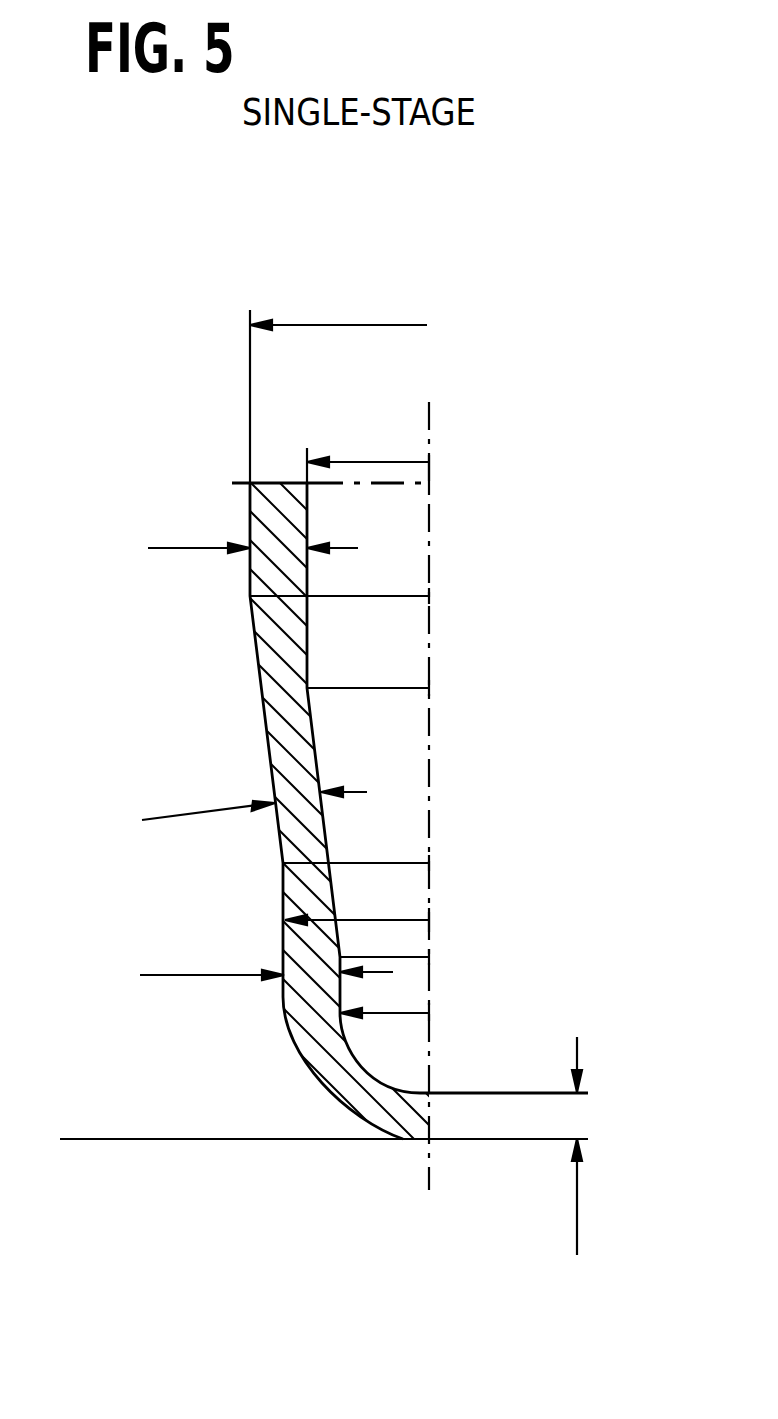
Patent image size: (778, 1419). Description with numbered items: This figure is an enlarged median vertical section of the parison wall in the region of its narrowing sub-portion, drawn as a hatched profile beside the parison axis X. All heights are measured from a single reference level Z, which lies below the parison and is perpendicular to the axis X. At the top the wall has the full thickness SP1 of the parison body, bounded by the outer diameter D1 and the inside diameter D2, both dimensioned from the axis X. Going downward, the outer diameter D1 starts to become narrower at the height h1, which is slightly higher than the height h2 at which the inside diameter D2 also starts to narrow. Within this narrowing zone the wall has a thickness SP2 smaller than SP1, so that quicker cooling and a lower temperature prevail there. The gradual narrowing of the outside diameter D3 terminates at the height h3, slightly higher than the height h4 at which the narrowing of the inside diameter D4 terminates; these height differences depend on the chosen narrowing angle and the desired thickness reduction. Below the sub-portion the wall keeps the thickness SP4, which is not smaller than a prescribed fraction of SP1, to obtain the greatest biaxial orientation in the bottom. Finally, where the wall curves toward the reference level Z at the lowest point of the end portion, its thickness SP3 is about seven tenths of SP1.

The outer diameter of the parison D1 is at (338, 384).
The inside diameter of the parison D2 is at (368, 453).
The outside diameter of the parison D3 is at (357, 904).
The inside diameter of the parison D4 is at (384, 997).
The height at which the outer diameter starts to narrow h1 is at (363, 587).
The height at which the inside diameter starts to narrow h2 is at (392, 681).
The height at which the outside diameter narrowing terminates h3 is at (380, 854).
The height at which the inside diameter narrowing terminates h4 is at (408, 948).
The thickness of the parison body SP1 is at (253, 529).
The thickness in the narrowed zone SP2 is at (254, 796).
The thickness of the wall at the lowest point of the end portion SP3 is at (561, 1146).
The wall thickness of the lower part SP4 is at (266, 958).
The axis of the parison X is at (453, 520).
The reference level Z is at (311, 1140).